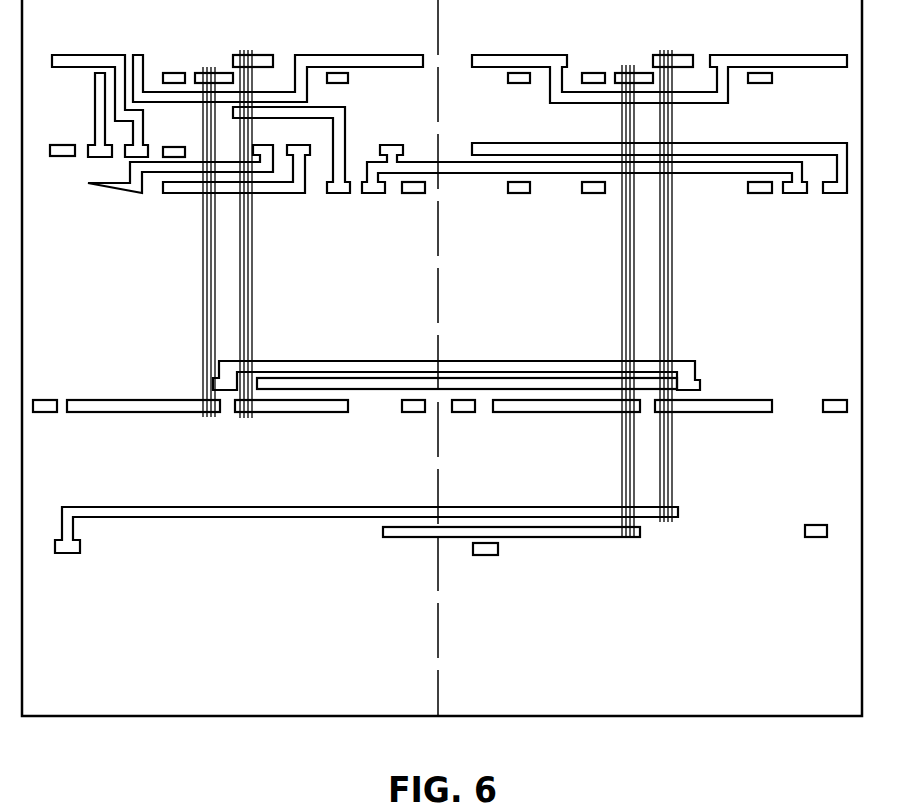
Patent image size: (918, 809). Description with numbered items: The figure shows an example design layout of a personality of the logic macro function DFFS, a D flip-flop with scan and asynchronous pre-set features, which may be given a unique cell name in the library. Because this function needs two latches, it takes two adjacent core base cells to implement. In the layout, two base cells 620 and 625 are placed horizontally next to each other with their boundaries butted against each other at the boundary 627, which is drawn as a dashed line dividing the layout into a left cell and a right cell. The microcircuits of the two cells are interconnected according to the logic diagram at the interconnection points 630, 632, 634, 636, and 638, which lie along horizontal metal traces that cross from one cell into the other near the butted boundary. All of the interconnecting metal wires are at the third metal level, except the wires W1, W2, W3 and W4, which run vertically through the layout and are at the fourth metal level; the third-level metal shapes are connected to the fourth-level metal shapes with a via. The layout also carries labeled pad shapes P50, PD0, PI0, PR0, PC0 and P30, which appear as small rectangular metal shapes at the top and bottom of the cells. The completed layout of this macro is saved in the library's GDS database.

The base cell 620 is at (225, 718).
The base cell 625 is at (638, 717).
The boundary 627 is at (437, 673).
The interconnection point 630 is at (438, 163).
The interconnection point 632 is at (438, 361).
The interconnection point 634 is at (440, 389).
The interconnection point 636 is at (438, 507).
The interconnection point 638 is at (438, 537).
The wire W1 is at (203, 245).
The wire W2 is at (253, 262).
The wire W3 is at (622, 245).
The wire W4 is at (674, 262).
The pad P50 is at (100, 94).
The pad PD0 is at (64, 138).
The pad PI0 is at (174, 139).
The pad PR0 is at (201, 157).
The pad PC0 is at (673, 45).
The pad P30 is at (485, 563).